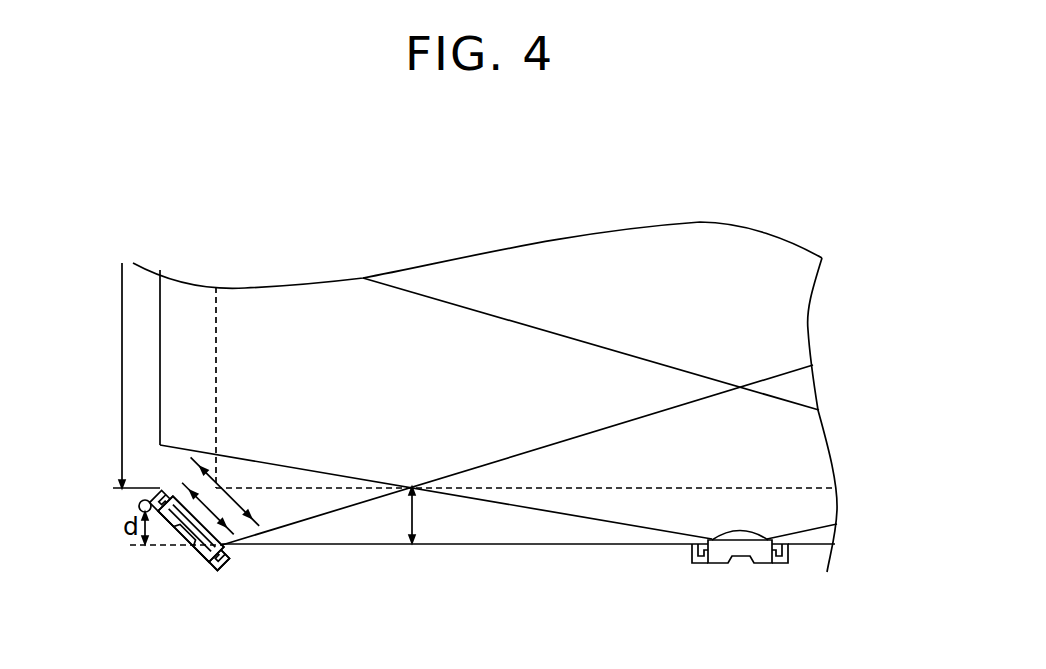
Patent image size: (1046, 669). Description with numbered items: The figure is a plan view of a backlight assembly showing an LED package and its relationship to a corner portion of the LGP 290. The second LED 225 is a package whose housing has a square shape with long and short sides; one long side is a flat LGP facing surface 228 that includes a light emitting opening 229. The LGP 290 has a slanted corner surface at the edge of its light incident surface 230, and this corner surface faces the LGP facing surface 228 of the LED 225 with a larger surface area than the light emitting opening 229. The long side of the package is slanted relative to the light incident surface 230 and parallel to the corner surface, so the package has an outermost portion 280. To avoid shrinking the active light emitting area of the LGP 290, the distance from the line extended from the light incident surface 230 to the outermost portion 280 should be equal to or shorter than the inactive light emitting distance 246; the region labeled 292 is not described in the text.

The second LED 225 is at (162, 549).
The LGP facing surface 228 is at (295, 441).
The light emitting opening 229 is at (208, 510).
The light incident surface 230 is at (483, 546).
The inactive light emitting distance 246 is at (437, 515).
The outermost portion 280 is at (139, 504).
The LGP 290 is at (753, 302).
The light incident portion 292 is at (216, 334).